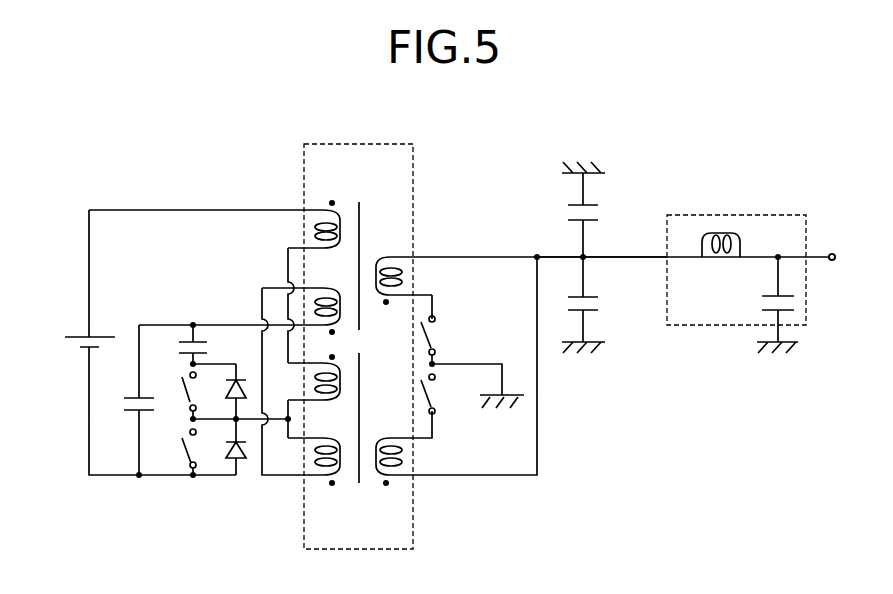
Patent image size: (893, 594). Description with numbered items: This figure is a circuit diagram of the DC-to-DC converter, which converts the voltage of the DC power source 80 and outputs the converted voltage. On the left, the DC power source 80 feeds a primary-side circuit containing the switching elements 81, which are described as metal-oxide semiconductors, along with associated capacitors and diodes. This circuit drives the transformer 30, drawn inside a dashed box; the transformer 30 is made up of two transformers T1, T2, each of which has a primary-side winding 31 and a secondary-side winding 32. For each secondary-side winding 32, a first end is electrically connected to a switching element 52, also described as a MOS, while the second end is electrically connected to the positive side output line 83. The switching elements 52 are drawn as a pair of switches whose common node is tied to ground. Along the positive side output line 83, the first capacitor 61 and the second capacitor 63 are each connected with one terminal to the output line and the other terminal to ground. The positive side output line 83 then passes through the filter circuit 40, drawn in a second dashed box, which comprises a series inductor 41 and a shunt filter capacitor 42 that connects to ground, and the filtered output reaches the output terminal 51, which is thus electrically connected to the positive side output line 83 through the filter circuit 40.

The transformer 30 is at (393, 143).
The transformer T1 is at (397, 177).
The transformer T2 is at (371, 505).
The primary-side winding 31 is at (312, 250).
The secondary-side winding 32 is at (385, 256).
The switching element 52 is at (428, 337).
The DC power source 80 is at (75, 336).
The switching element 81 is at (181, 397).
The first capacitor 61 is at (592, 206).
The second capacitor 63 is at (590, 298).
The positive side output line 83 is at (635, 257).
The filter circuit 40 is at (793, 214).
The inductor 41 is at (743, 236).
The filter capacitor 42 is at (772, 296).
The output terminal 51 is at (831, 253).